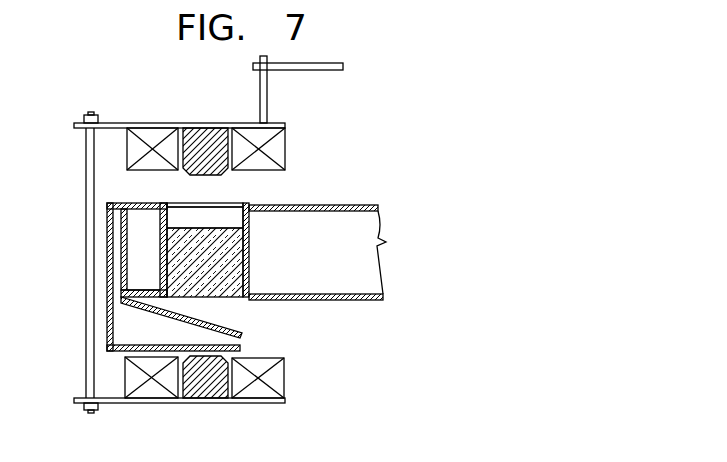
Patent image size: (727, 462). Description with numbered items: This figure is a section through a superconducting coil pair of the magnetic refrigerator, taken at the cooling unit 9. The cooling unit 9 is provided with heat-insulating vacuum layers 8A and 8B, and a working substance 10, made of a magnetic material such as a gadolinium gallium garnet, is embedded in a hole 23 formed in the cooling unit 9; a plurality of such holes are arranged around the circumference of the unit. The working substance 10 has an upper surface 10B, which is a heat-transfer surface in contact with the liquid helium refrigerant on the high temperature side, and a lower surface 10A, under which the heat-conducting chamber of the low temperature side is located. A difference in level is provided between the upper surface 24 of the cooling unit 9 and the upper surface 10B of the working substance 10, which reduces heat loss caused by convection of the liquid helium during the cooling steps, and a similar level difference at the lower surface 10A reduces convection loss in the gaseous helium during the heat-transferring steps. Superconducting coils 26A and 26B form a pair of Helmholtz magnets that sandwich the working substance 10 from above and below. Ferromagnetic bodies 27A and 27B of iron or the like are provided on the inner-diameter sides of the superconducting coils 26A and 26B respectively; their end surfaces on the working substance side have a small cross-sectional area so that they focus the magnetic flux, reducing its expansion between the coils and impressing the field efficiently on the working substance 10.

The heat-insulating vacuum layer 8A is at (135, 253).
The heat-insulating vacuum layer 8B is at (305, 212).
The cooling unit 9 is at (382, 240).
The working substance 10 is at (232, 258).
The lower surface of working substance 10A is at (222, 299).
The upper surface of working substance 10B is at (247, 228).
The hole 23 is at (228, 216).
The upper surface of cooling unit 24 is at (197, 203).
The superconducting coil 26A is at (283, 156).
The superconducting coil 26B is at (283, 383).
The ferromagnetic body 27A is at (207, 127).
The ferromagnetic body 27B is at (203, 392).